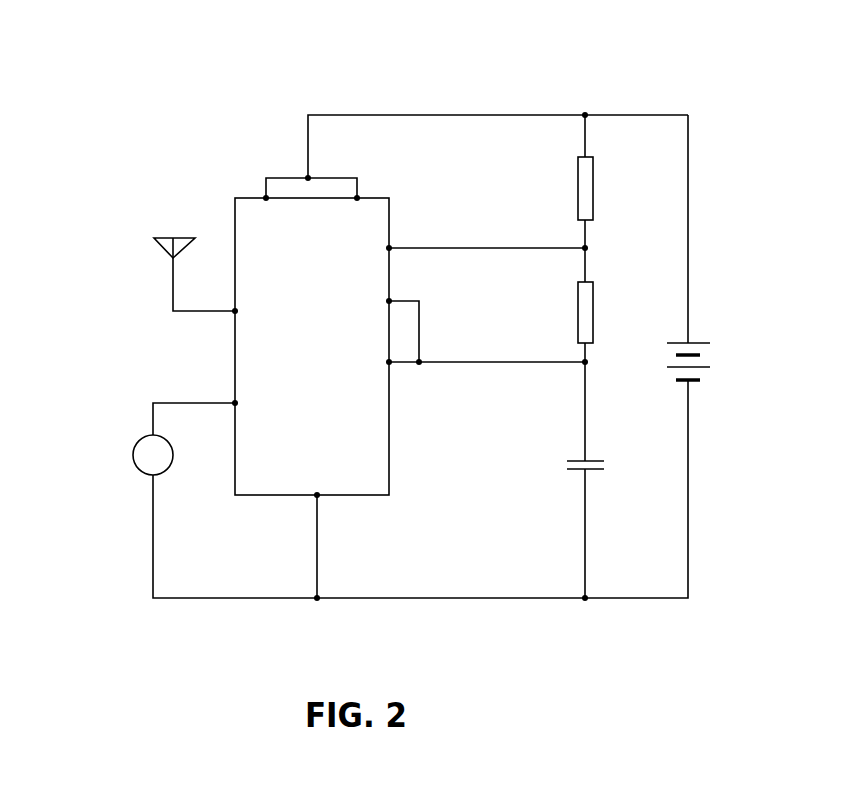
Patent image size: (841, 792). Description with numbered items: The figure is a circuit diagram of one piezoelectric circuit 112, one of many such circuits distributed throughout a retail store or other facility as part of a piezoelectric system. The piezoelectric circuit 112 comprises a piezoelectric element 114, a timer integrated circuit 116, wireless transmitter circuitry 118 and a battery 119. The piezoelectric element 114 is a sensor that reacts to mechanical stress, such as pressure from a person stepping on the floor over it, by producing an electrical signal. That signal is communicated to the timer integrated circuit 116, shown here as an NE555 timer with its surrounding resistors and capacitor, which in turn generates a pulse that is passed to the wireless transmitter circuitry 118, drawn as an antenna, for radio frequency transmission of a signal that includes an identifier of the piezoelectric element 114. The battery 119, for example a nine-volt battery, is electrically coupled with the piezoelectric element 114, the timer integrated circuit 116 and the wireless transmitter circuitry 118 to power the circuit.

The piezoelectric circuit 112 is at (156, 77).
The piezoelectric element 114 is at (139, 444).
The timer integrated circuit 116 is at (241, 212).
The wireless transmitter circuitry 118 is at (167, 238).
The battery 119 is at (699, 340).